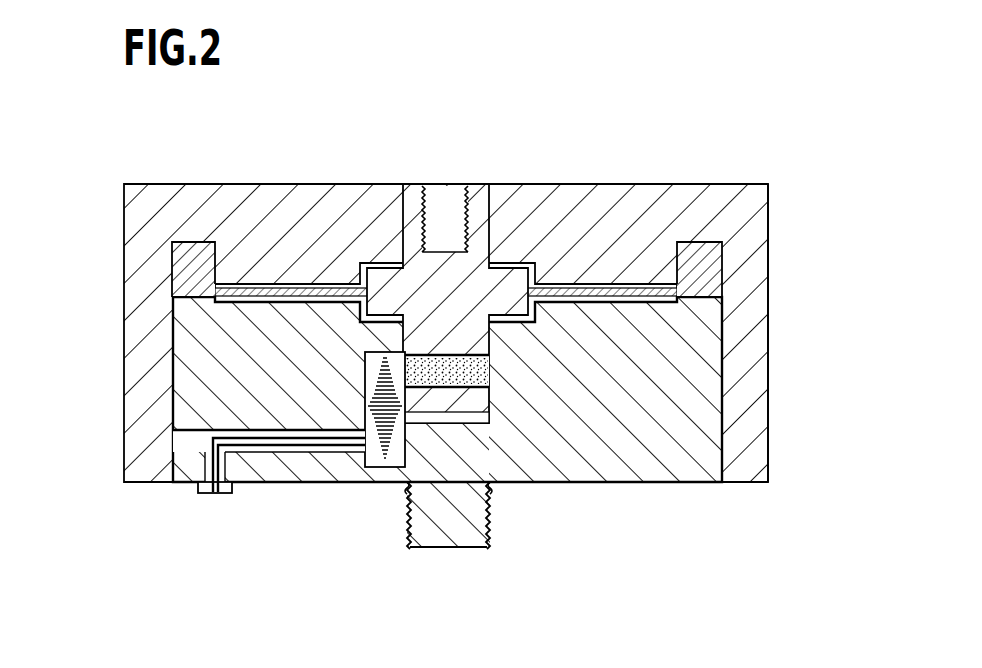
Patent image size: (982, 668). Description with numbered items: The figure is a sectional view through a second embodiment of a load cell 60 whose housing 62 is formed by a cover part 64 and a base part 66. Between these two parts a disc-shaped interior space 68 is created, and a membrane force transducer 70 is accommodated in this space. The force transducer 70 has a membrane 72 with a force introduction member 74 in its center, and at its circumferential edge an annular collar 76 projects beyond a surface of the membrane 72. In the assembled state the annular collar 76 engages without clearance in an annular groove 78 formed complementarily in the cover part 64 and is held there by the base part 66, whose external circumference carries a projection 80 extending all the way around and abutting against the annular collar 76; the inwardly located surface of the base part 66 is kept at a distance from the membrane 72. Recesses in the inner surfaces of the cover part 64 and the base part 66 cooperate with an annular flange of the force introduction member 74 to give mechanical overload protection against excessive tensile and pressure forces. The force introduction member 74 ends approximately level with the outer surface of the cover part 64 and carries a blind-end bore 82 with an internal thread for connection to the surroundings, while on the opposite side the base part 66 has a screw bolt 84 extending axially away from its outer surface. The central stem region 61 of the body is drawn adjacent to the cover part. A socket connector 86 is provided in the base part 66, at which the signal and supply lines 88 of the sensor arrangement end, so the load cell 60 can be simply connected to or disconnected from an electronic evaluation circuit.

The load cell 60 is at (786, 128).
The central stem of housing 61 is at (510, 212).
The housing 62 is at (168, 508).
The cover part 64 is at (768, 365).
The base part 66 is at (665, 483).
The interior space 68 is at (594, 282).
The membrane force transducer 70 is at (243, 328).
The membrane 72 is at (283, 300).
The force introduction member 74 is at (487, 150).
The annular collar 76 is at (703, 272).
The annular groove 78 is at (712, 285).
The projection 80 is at (205, 298).
The blind-end bore 82 is at (437, 188).
The screw bolt 84 is at (486, 567).
The socket connector 86 is at (213, 520).
The signal and supply lines 88 is at (305, 455).